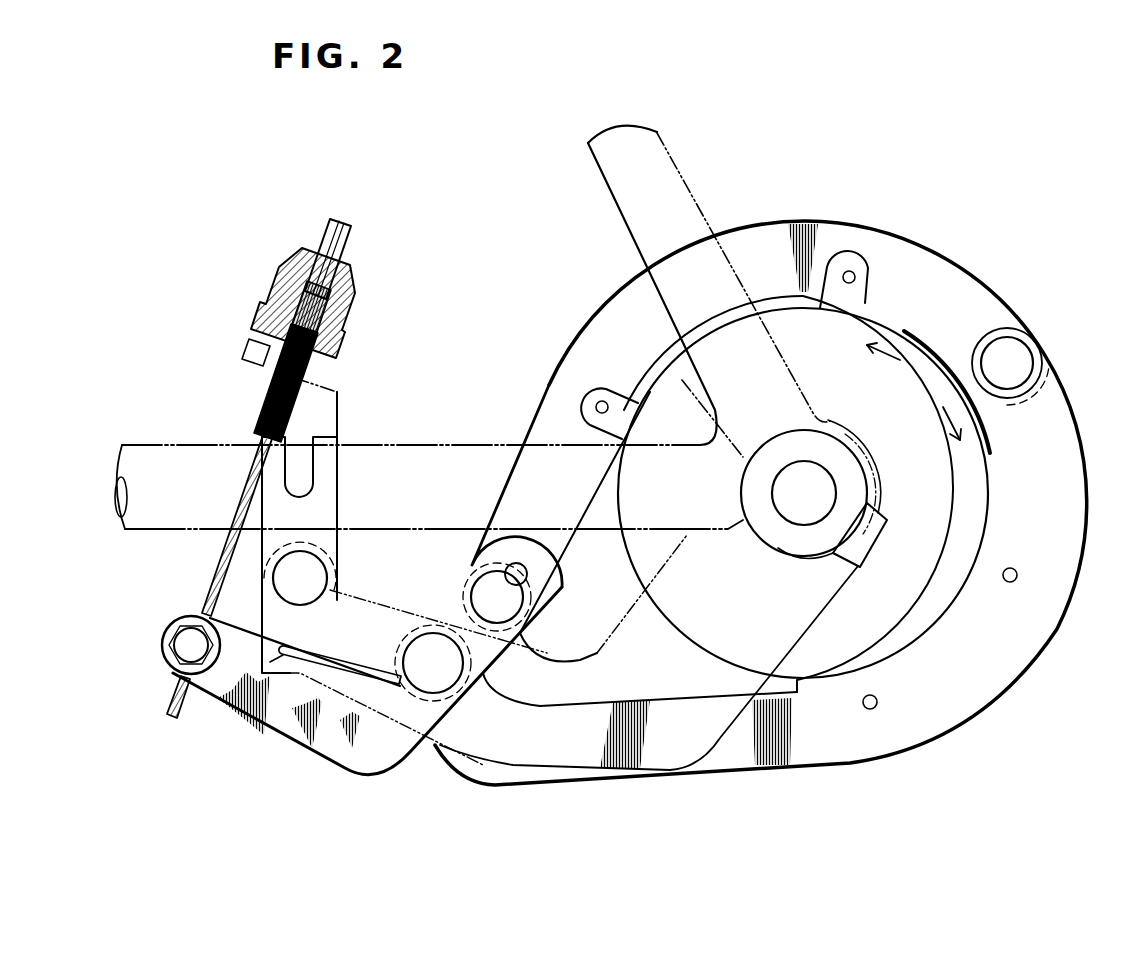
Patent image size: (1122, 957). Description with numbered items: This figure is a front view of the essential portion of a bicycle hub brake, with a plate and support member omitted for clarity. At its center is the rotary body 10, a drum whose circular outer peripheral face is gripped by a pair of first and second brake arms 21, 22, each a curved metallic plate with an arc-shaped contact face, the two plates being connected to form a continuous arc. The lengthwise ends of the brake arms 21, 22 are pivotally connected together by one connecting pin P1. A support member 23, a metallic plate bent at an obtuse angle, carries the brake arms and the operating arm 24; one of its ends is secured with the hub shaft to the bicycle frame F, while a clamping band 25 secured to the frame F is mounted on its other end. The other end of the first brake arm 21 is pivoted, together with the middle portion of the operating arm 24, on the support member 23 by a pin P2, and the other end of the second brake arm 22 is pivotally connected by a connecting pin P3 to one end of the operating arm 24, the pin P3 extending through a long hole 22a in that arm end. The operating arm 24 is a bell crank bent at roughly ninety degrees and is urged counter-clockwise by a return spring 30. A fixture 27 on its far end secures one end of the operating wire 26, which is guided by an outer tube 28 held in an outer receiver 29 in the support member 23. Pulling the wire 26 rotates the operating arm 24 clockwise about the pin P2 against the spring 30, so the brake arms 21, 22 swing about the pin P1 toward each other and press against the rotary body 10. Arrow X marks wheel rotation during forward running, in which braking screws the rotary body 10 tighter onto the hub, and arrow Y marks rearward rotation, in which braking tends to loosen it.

The rotary body 10 is at (877, 333).
The first brake arm 21 is at (737, 752).
The second brake arm 22 is at (602, 327).
The long hole 22a is at (505, 568).
The support member 23 is at (548, 743).
The operating arm 24 is at (285, 725).
The clamping band 25 is at (333, 485).
The operating wire 26 is at (213, 573).
The fixture 27 is at (188, 648).
The outer tube 28 is at (327, 242).
The outer receiver 29 is at (262, 352).
The return spring 30 is at (363, 672).
The connecting pin P1 is at (1015, 358).
The pin P2 is at (432, 672).
The connecting pin P3 is at (483, 592).
The frame F is at (445, 442).
The arrow X is at (867, 344).
The arrow Y is at (955, 441).